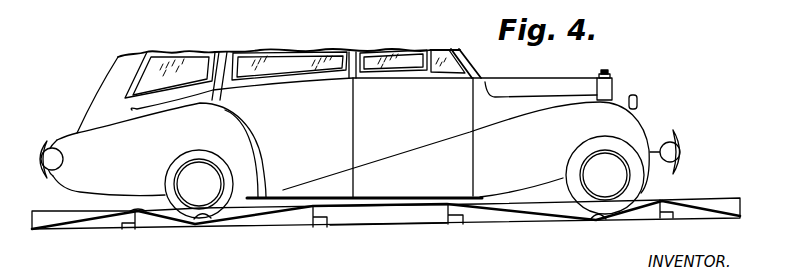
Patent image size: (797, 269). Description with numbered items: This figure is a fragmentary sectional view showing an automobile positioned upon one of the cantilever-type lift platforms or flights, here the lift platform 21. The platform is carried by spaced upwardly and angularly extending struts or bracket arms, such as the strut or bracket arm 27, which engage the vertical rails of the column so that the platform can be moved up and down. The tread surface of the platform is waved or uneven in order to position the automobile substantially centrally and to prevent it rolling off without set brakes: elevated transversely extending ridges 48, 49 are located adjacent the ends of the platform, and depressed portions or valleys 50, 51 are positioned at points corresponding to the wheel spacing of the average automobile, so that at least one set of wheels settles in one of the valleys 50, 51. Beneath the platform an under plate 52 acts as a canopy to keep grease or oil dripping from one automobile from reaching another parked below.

The lift platform 21 is at (720, 203).
The strut or bracket arm 27 is at (320, 225).
The transversely extending ridge 48 is at (663, 202).
The transversely extending ridge 49 is at (148, 214).
The valley 50 is at (590, 224).
The valley 51 is at (206, 224).
The under plate 52 is at (374, 228).